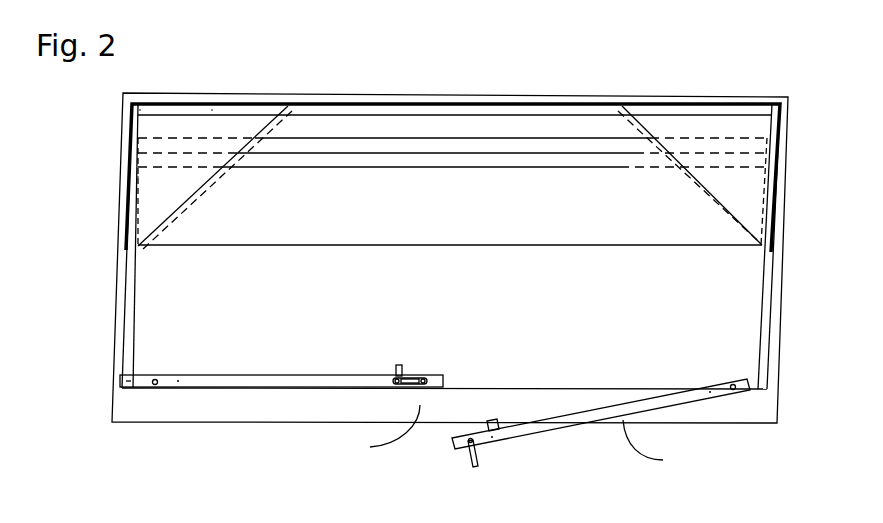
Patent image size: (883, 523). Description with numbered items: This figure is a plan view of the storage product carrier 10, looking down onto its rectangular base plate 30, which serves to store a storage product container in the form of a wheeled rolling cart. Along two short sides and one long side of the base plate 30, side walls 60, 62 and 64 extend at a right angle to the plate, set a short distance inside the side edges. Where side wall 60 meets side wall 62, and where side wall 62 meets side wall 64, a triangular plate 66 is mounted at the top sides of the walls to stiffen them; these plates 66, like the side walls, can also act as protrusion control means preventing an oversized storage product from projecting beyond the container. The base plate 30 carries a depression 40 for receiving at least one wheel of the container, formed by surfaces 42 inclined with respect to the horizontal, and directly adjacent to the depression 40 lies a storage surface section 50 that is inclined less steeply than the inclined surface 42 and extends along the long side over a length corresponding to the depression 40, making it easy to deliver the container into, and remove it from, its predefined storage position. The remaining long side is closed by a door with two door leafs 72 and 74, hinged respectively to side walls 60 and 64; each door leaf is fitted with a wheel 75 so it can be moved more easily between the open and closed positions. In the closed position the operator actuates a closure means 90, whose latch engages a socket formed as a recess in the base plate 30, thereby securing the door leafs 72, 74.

The storage product carrier 10 is at (800, 70).
The base plate 30 is at (287, 424).
The depression 40 is at (334, 148).
The inclined surface 42 is at (485, 165).
The storage surface section 50 is at (490, 218).
The side wall 60 is at (133, 302).
The side wall 62 is at (392, 112).
The side wall 64 is at (763, 305).
The triangular plate 66 is at (163, 122).
The door leaf 72 is at (188, 382).
The door leaf 74 is at (565, 425).
The wheel 75 is at (398, 364).
The closure means 90 is at (416, 373).